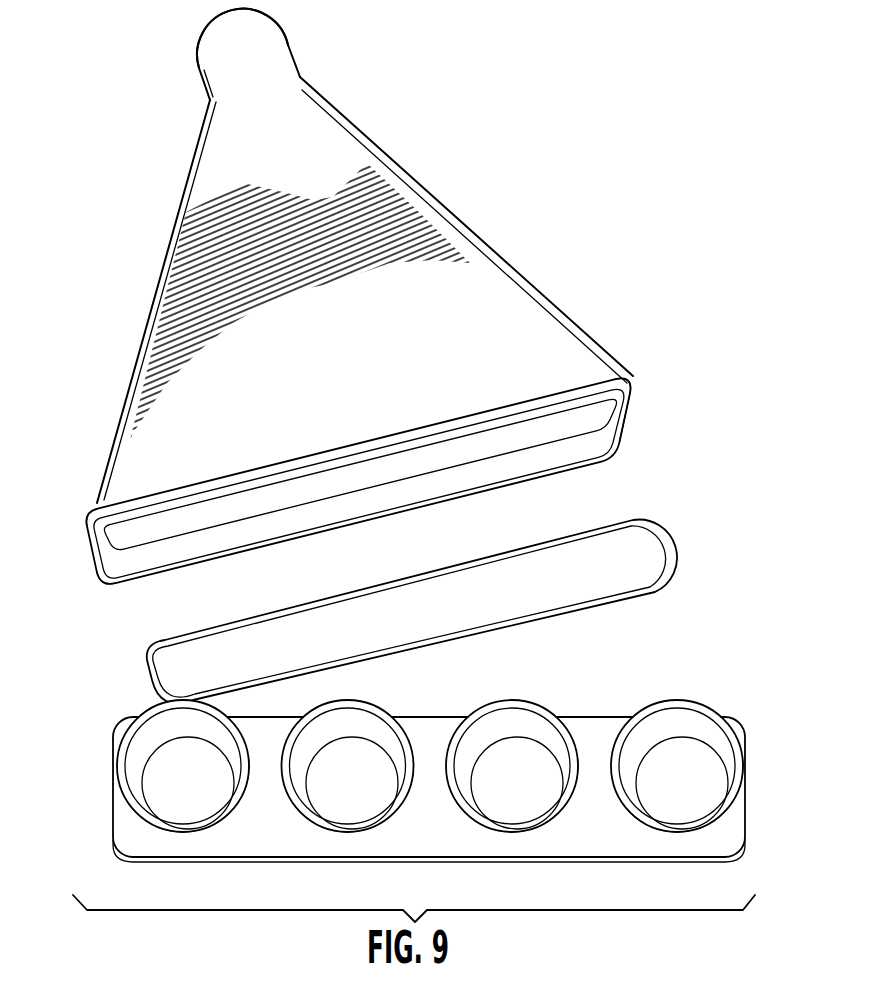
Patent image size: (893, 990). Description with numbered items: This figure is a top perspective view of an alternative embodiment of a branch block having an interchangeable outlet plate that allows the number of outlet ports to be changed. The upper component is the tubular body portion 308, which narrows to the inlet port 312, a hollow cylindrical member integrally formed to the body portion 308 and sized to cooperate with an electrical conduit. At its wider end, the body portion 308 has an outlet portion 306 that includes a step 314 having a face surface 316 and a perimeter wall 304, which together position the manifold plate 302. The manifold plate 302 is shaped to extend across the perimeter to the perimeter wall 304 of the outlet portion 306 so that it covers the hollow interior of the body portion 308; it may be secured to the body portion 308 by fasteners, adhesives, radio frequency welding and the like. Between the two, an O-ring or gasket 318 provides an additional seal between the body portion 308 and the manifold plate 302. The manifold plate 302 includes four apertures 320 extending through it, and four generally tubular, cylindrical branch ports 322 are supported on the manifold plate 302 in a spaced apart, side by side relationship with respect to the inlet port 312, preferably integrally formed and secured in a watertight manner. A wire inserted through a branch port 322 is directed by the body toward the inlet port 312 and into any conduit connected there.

The manifold plate 302 is at (587, 716).
The perimeter wall 304 is at (640, 430).
The outlet portion 306 is at (96, 503).
The body portion 308 is at (562, 254).
The inlet port 312 is at (276, 45).
The step 314 is at (98, 570).
The face surface 316 is at (160, 557).
The O-ring or gasket 318 is at (670, 550).
The apertures 320 is at (168, 777).
The branch ports 322 is at (118, 778).